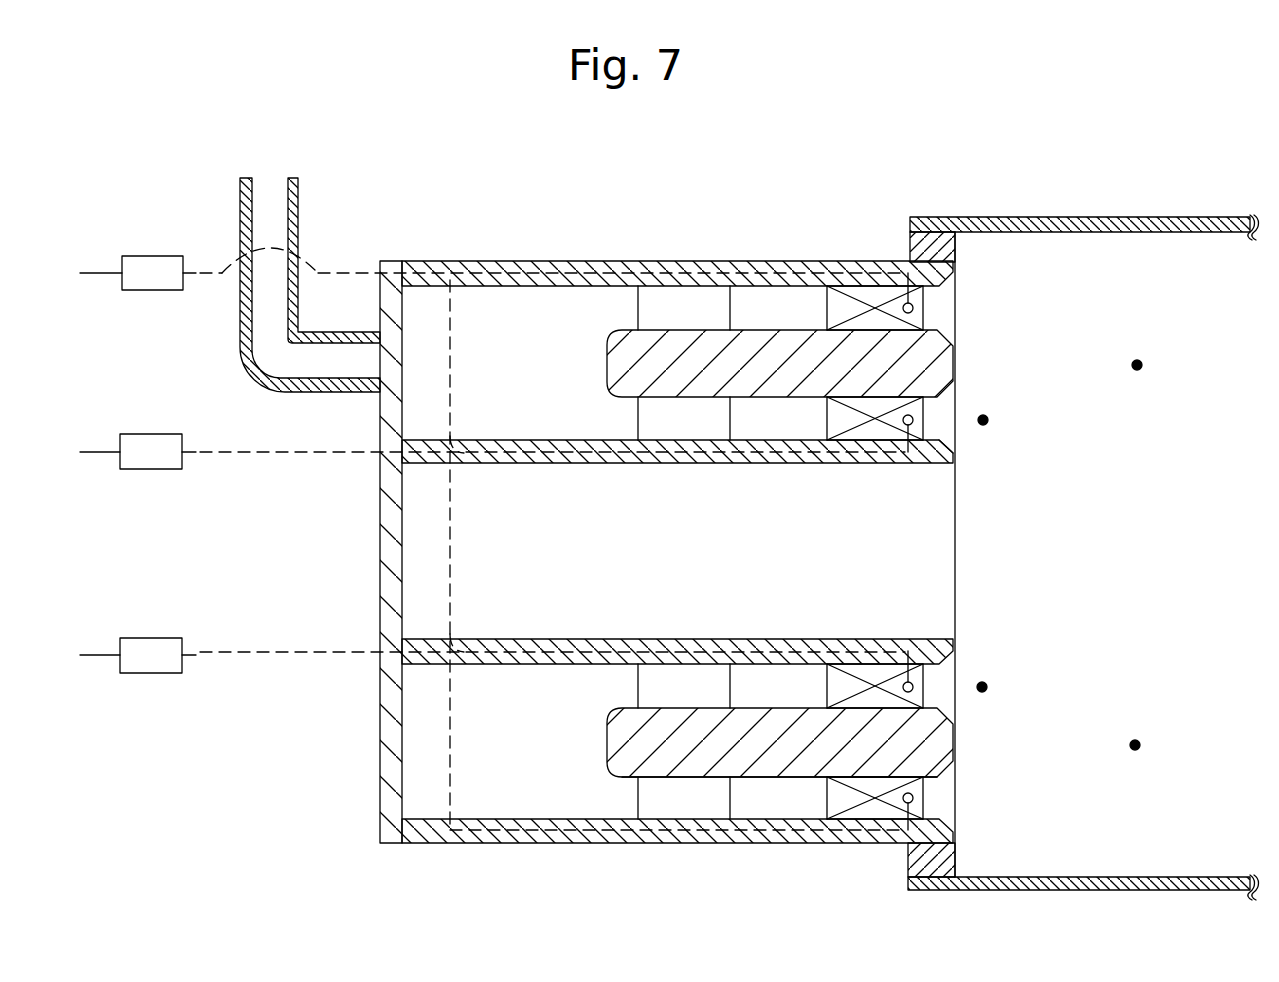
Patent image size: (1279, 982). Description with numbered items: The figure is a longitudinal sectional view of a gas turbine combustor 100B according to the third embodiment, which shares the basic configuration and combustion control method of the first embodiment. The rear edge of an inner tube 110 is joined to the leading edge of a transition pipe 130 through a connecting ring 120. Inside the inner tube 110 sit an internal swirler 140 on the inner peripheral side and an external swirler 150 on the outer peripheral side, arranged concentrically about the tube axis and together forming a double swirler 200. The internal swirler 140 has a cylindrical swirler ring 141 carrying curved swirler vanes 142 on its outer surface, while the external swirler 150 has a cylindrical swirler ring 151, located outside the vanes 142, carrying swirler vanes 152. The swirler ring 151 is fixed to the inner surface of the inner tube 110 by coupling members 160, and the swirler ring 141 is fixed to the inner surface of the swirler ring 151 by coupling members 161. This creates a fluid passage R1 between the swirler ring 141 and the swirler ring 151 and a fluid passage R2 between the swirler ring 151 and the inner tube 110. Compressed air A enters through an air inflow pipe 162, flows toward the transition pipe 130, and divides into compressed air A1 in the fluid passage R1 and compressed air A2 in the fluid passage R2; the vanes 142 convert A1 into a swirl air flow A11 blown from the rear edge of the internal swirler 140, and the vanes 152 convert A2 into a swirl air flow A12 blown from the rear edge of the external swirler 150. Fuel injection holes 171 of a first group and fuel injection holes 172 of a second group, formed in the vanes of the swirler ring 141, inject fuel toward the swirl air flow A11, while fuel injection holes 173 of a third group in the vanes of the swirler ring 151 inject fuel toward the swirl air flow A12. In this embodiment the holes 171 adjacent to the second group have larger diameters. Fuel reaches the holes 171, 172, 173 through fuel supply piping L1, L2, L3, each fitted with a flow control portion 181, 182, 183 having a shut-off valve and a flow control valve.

The combustor 100B is at (920, 128).
The inner tube 110 is at (675, 261).
The connecting ring 120 is at (928, 242).
The transition pipe 130 is at (1137, 217).
The internal swirler 140 is at (962, 433).
The swirler ring 141 is at (945, 465).
The swirler vanes 142 is at (875, 433).
The external swirler 150 is at (972, 306).
The swirler ring 151 is at (950, 363).
The swirler vanes 152 is at (867, 293).
The coupling members 160 is at (650, 316).
The coupling members 161 is at (650, 415).
The air inflow pipe 162 is at (241, 197).
The fuel injection holes of a first group 171 is at (905, 424).
The fuel injection holes of a second group 172 is at (903, 684).
The fuel injection holes of a third group 173 is at (900, 306).
The flow control portion 181 is at (143, 471).
The flow control portion 182 is at (143, 675).
The flow control portion 183 is at (143, 293).
The double swirler 200 is at (985, 622).
The compressed air A is at (269, 210).
The compressed air A1 is at (608, 686).
The compressed air A2 is at (608, 800).
The swirl air flow A11 is at (930, 687).
The swirl air flow A12 is at (930, 798).
The fluid passage R1 is at (633, 700).
The fluid passage R2 is at (635, 782).
The fuel supply piping L1 is at (228, 455).
The fuel supply piping L2 is at (228, 657).
The fuel supply piping L3 is at (207, 277).